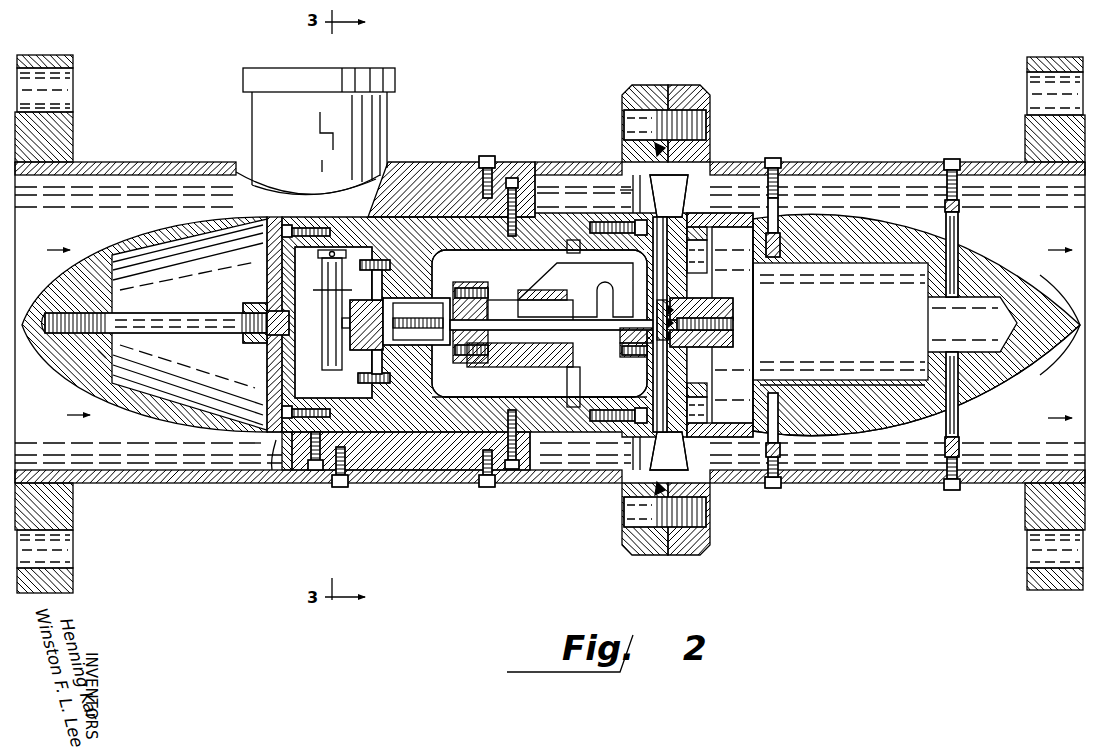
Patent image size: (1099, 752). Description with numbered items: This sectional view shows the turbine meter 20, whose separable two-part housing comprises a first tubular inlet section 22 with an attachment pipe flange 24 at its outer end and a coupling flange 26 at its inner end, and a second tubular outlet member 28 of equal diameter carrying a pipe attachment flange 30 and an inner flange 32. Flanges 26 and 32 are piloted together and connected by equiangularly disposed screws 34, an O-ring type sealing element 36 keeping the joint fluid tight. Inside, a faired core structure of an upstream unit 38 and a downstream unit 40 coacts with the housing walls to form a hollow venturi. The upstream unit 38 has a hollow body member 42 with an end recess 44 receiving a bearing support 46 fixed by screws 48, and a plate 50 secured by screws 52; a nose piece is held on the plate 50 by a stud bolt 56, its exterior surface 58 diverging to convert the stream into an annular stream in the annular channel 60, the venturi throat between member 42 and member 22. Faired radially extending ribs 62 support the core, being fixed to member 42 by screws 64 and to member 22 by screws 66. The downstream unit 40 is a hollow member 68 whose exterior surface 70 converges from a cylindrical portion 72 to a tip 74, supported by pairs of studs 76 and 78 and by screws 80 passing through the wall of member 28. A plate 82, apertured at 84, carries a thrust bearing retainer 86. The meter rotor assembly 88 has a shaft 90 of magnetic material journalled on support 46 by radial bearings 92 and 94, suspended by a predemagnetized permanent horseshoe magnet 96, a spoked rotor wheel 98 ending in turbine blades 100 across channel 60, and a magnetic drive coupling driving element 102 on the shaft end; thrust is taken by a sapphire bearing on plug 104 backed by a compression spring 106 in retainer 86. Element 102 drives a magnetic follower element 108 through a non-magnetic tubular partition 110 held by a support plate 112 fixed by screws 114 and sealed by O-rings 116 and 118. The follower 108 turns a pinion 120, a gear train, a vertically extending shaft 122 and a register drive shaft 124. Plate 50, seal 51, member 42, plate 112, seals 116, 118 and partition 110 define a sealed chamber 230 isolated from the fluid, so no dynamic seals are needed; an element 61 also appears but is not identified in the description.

The turbine meter 20 is at (518, 137).
The first tubular inlet section 22 is at (150, 150).
The attachment pipe flange 24 is at (75, 66).
The coupling flange 26 is at (655, 88).
The second tubular outlet member 28 is at (875, 162).
The pipe attachment flange 30 is at (1027, 63).
The flange 32 is at (700, 81).
The screws 34 is at (708, 120).
The O-ring type sealing element 36 is at (700, 150).
The upstream unit 38 is at (268, 434).
The downstream unit 40 is at (856, 433).
The hollow body member 42 is at (410, 425).
The end recess 44 is at (486, 410).
The bearing support 46 is at (617, 386).
The screws 48 is at (590, 228).
The plate 50 is at (267, 270).
The seal 51 is at (105, 356).
The screws 52 is at (325, 231).
The stud bolt 56 is at (188, 313).
The exterior surface 58 is at (85, 250).
The annular channel 60 is at (560, 174).
The stud 61 is at (505, 420).
The radially extending ribs 62 is at (440, 172).
The screws 64 is at (336, 447).
The screws 66 is at (487, 156).
The hollow member 68 is at (843, 380).
The exterior surface 70 is at (845, 220).
The cylindrical portion 72 is at (707, 213).
The tip 74 is at (1068, 335).
The studs 76 is at (782, 233).
The studs 78 is at (960, 254).
The screws 80 is at (774, 158).
The plate 82 is at (708, 375).
The aperture 84 is at (708, 268).
The thrust bearing retainer 86 is at (745, 342).
The meter rotor assembly 88 is at (620, 190).
The shaft 90 is at (545, 333).
The radial bearing 92 is at (455, 364).
The radial bearing 94 is at (617, 342).
The permanent horseshoe magnet 96 is at (610, 290).
The spoked rotor wheel 98 is at (668, 259).
The turbine blades 100 is at (682, 200).
The magnetic drive coupling driving element 102 is at (444, 292).
The plug 104 is at (695, 319).
The compression spring 106 is at (701, 334).
The magnetic follower element 108 is at (385, 300).
The tubular partition 110 is at (415, 344).
The support plate 112 is at (380, 270).
The screws 114 is at (384, 374).
The O-ring 116 is at (390, 376).
The O-ring 118 is at (392, 268).
The pinion 120 is at (323, 328).
The vertically extending shaft 122 is at (331, 366).
The register drive shaft 124 is at (319, 253).
The sealed chamber 230 is at (268, 365).